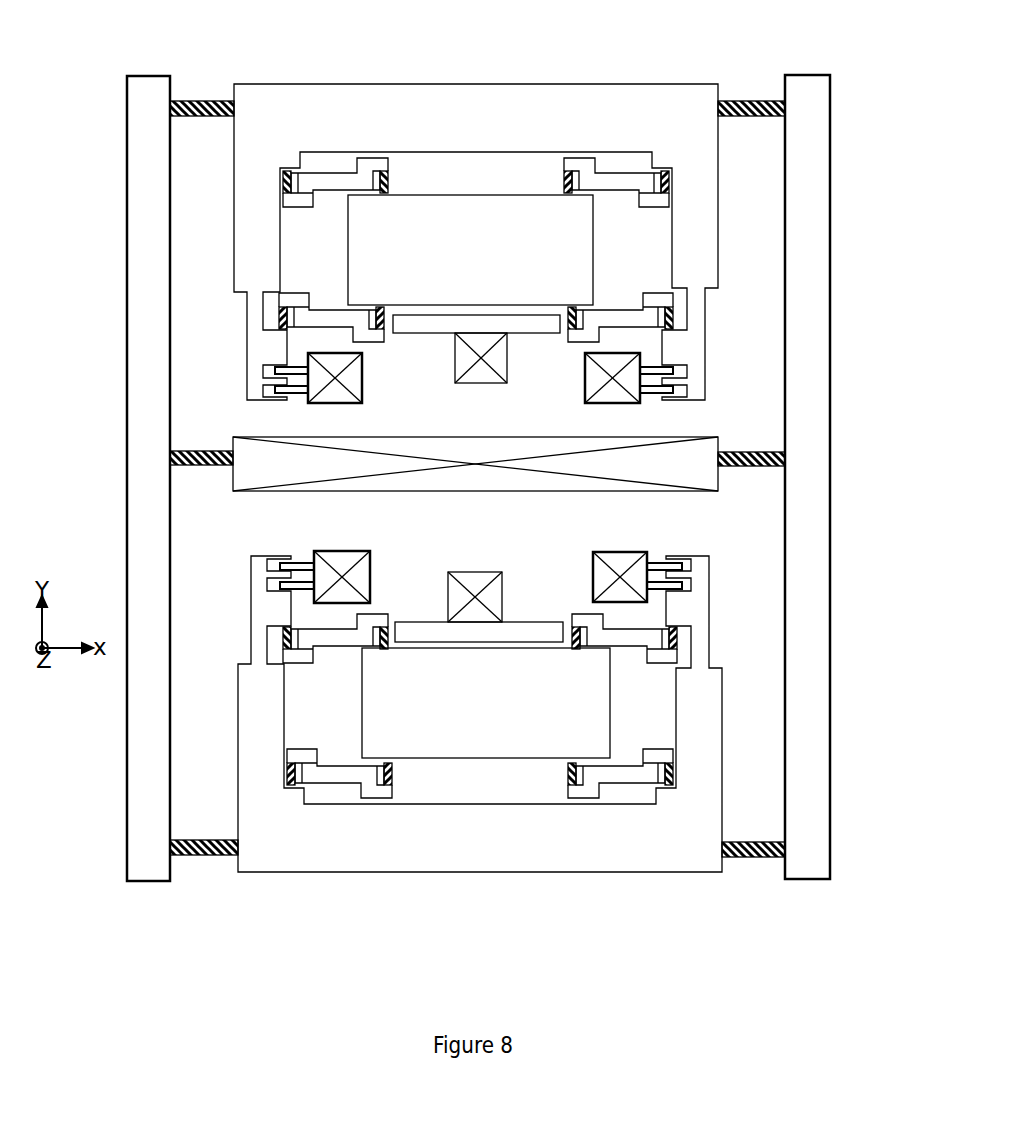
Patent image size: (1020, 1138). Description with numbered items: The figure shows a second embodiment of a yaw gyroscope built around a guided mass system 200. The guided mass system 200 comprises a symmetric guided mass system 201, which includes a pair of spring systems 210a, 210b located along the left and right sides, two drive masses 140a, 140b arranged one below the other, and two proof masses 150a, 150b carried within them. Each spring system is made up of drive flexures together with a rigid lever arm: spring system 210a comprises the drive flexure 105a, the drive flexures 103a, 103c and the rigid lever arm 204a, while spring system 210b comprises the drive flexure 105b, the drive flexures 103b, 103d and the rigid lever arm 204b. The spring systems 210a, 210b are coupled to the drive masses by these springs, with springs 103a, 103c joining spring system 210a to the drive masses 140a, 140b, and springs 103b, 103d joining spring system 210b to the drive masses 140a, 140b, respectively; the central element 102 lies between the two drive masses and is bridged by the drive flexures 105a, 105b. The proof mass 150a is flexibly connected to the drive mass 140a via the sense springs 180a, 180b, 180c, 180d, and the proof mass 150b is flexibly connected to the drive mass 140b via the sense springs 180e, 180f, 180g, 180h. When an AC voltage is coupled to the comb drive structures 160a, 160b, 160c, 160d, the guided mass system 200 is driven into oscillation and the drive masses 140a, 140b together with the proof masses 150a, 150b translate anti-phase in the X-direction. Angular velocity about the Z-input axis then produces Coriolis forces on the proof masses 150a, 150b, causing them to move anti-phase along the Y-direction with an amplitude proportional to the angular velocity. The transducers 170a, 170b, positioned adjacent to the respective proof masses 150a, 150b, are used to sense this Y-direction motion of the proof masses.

The central stage 102 is at (490, 435).
The drive flexure 103a is at (195, 853).
The drive flexure 103b is at (770, 857).
The drive flexure 103c is at (188, 100).
The drive flexure 103d is at (757, 102).
The drive flexure 105a is at (203, 466).
The drive flexure 105b is at (752, 467).
The drive mass 140a is at (460, 865).
The drive mass 140b is at (472, 83).
The proof mass 150a is at (603, 723).
The proof mass 150b is at (348, 235).
The comb drive structure 160a is at (350, 551).
The comb drive structure 160b is at (628, 532).
The comb drive structure 160c is at (353, 402).
The comb drive structure 160d is at (607, 402).
The transducer 170a is at (537, 600).
The transducer 170b is at (442, 333).
The sense spring 180a is at (390, 793).
The sense spring 180b is at (572, 793).
The sense spring 180c is at (330, 647).
The sense spring 180d is at (633, 647).
The sense spring 180e is at (388, 166).
The sense spring 180f is at (565, 162).
The sense spring 180g is at (322, 310).
The sense spring 180h is at (623, 313).
The guided mass system 200 is at (490, 988).
The symmetric guided mass system 201 is at (762, 642).
The rigid lever arm 204a is at (126, 485).
The rigid lever arm 204b is at (830, 503).
The spring system 210a is at (97, 378).
The spring system 210b is at (855, 360).